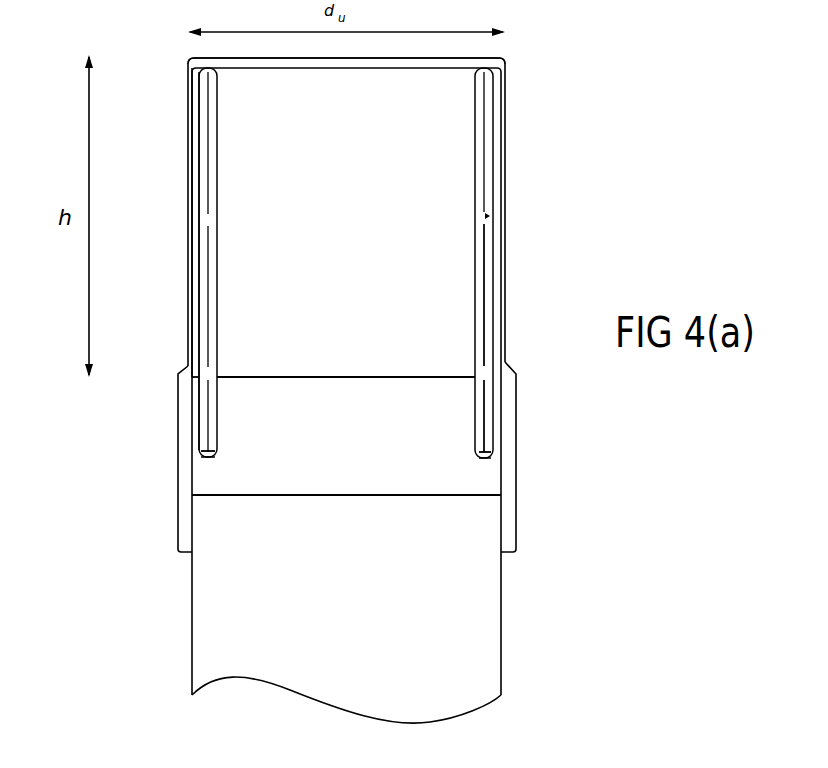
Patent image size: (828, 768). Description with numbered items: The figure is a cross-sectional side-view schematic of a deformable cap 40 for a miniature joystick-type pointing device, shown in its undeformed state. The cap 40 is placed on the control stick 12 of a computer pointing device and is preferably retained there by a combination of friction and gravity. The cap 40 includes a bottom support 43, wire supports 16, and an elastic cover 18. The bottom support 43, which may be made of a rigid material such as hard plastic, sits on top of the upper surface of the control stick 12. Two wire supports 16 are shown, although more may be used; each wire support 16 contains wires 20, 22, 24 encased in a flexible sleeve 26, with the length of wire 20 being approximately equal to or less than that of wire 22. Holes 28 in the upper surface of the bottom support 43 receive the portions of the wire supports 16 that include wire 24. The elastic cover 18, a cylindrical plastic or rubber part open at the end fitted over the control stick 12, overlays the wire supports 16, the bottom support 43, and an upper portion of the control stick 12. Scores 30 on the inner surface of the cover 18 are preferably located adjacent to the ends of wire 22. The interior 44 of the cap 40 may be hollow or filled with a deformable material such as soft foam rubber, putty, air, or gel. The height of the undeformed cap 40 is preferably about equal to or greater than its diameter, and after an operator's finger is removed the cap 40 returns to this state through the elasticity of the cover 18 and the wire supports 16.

The control stick 12 is at (466, 651).
The wire support 16 is at (189, 153).
The elastic cover 18 is at (189, 197).
The wire 20 is at (485, 110).
The wire 22 is at (484, 257).
The wire 24 is at (485, 398).
The flexible sleeve 26 is at (496, 178).
The hole 28 is at (207, 455).
The score 30 is at (192, 362).
The cap 40 is at (548, 69).
The bottom support 43 is at (465, 487).
The interior 44 is at (463, 365).